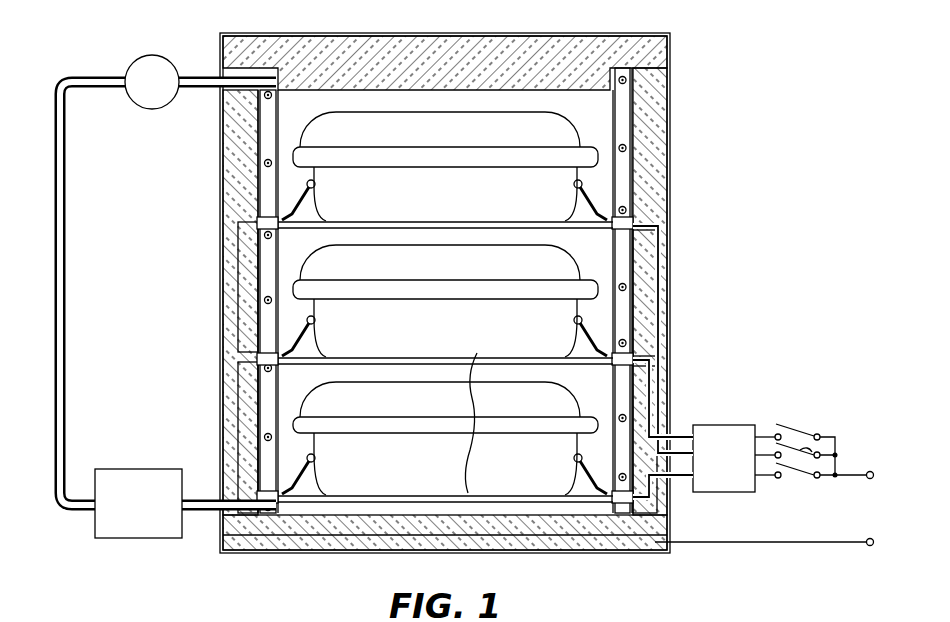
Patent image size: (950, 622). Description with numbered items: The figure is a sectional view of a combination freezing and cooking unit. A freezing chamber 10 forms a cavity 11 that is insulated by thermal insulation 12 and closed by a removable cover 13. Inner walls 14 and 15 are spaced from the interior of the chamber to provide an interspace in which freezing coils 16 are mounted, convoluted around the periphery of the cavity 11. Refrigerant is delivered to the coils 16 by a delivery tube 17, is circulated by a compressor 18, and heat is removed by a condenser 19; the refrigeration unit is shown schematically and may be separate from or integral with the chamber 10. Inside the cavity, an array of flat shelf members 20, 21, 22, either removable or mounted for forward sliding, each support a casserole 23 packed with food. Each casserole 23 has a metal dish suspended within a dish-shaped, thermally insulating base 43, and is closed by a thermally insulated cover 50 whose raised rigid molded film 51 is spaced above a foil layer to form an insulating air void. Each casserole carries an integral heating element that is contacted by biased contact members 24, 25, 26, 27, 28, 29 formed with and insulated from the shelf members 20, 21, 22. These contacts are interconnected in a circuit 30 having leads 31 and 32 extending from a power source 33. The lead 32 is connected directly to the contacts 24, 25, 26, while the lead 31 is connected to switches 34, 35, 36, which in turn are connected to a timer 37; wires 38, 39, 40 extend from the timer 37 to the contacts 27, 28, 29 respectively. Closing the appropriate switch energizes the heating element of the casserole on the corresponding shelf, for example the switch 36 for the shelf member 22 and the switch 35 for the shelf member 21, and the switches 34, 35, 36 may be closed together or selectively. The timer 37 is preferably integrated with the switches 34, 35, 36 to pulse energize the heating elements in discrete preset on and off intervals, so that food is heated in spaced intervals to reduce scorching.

The freezing chamber 10 is at (450, 312).
The cavity 11 is at (612, 122).
The thermal insulation 12 is at (660, 150).
The removable cover 13 is at (668, 52).
The inner wall 14 is at (282, 135).
The inner wall 15 is at (612, 178).
The freezing coils 16 is at (262, 242).
The delivery tube 17 is at (192, 75).
The compressor 18 is at (150, 55).
The condenser 19 is at (117, 540).
The shelf member 20 is at (310, 512).
The shelf member 21 is at (363, 370).
The shelf member 22 is at (401, 237).
The casserole 23 is at (433, 206).
The contact member 24 is at (309, 191).
The contact member 25 is at (308, 322).
The contact member 26 is at (310, 461).
The contact member 27 is at (571, 188).
The contact member 28 is at (574, 318).
The contact member 29 is at (574, 456).
The circuit 30 is at (817, 449).
The lead 31 is at (845, 480).
The lead 32 is at (800, 541).
The power source 33 is at (870, 538).
The switch 34 is at (798, 478).
The switch 35 is at (835, 437).
The switch 36 is at (790, 424).
The timer 37 is at (731, 425).
The wire 38 is at (660, 372).
The wire 39 is at (688, 430).
The wire 40 is at (688, 480).
The base 43 is at (483, 423).
The cover 50 is at (444, 293).
The film 51 is at (323, 122).